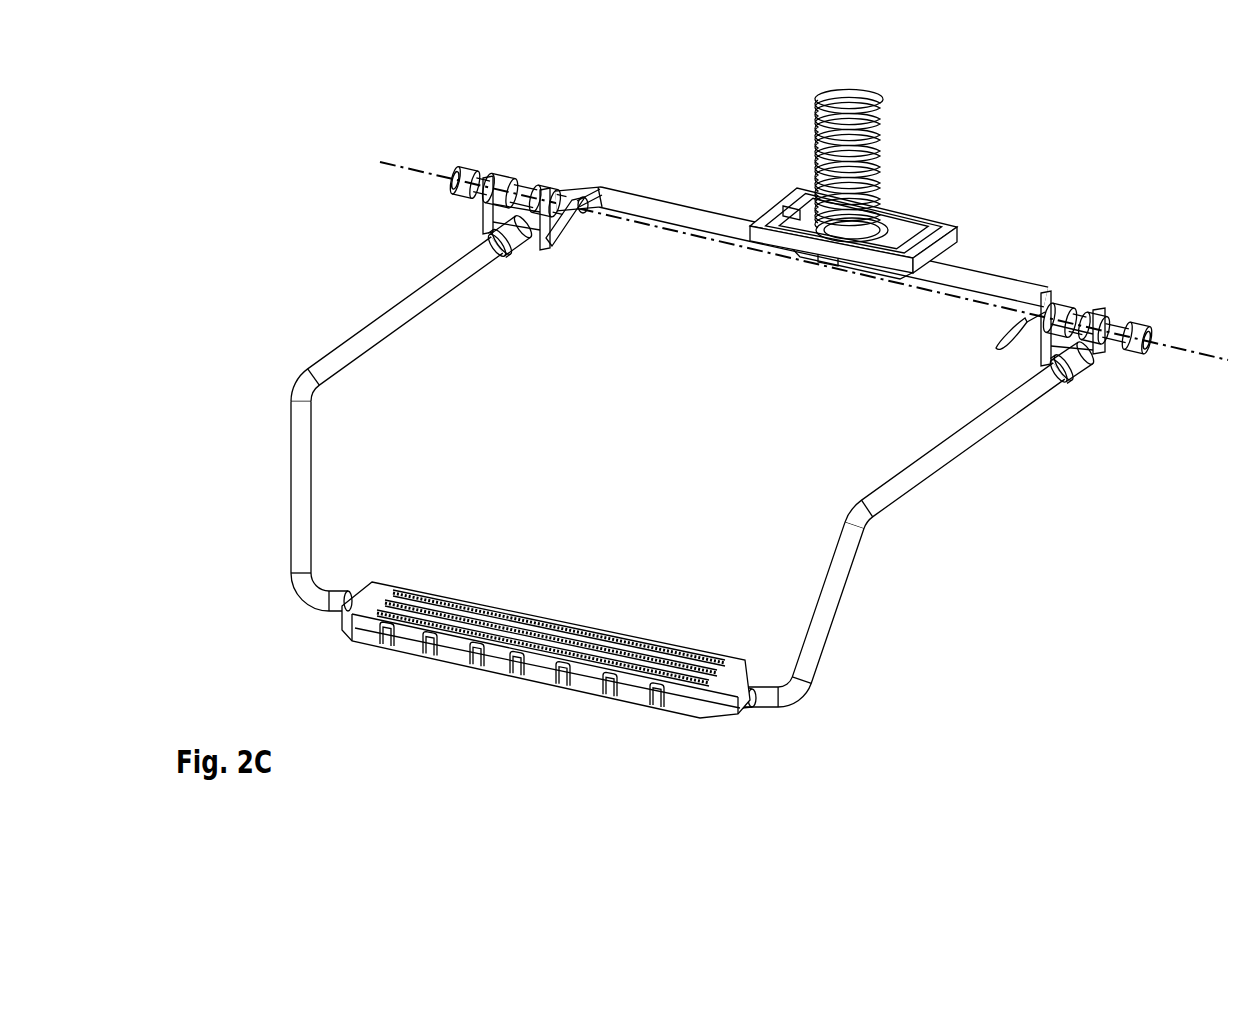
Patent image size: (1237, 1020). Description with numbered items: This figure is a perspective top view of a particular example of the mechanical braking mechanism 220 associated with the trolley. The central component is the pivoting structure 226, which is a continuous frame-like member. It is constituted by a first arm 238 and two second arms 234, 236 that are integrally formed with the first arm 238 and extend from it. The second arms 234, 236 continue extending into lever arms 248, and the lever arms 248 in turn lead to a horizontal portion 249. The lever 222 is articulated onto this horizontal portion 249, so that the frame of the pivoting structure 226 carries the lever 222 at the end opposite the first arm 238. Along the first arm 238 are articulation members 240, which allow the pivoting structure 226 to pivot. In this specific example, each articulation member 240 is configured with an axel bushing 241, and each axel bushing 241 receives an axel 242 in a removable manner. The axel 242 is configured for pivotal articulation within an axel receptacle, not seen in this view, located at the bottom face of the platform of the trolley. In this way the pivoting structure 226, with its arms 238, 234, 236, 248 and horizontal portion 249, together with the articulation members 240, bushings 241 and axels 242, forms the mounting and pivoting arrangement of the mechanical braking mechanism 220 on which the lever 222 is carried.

The mechanical braking mechanism 220 is at (1098, 131).
The lever 222 is at (540, 685).
The pivoting structure 226 is at (1080, 565).
The second arm 234 is at (930, 466).
The second arm 236 is at (412, 300).
The first arm 238 is at (700, 218).
The articulation member 240 is at (540, 245).
The axel bushing 241 is at (540, 190).
The axel 242 is at (592, 210).
The lever arm 248 is at (300, 485).
The horizontal portion 249 is at (750, 703).